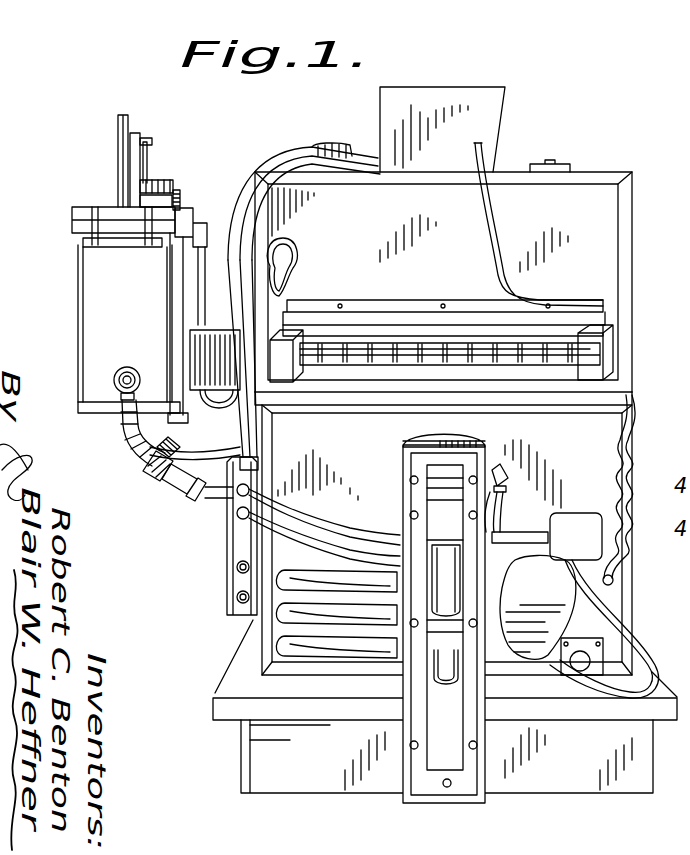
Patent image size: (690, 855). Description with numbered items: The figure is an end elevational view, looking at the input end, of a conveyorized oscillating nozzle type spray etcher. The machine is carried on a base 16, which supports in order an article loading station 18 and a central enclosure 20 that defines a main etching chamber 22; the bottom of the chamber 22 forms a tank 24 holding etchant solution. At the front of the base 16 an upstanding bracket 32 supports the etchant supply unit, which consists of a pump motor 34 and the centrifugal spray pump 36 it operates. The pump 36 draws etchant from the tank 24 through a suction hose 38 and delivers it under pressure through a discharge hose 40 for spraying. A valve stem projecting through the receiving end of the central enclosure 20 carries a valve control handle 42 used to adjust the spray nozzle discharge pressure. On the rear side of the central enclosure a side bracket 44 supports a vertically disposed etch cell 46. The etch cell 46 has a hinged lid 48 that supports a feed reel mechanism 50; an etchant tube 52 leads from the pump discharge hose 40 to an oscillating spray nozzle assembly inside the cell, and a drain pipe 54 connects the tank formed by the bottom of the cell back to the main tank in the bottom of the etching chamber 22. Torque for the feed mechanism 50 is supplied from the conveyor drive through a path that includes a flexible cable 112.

The base 16 is at (623, 782).
The article loading station 18 is at (615, 306).
The central enclosure 20 is at (632, 215).
The main etching chamber 22 is at (550, 595).
The tank 24 is at (582, 645).
The upstanding bracket 32 is at (487, 503).
The pump motor 34 is at (485, 438).
The spray pump 36 is at (447, 640).
The suction hose 38 is at (372, 667).
The discharge hose 40 is at (343, 630).
The valve control handle 42 is at (284, 284).
The side bracket 44 is at (205, 330).
The etch cell 46 is at (95, 290).
The hinged lid 48 is at (75, 215).
The feed reel mechanism 50 is at (170, 183).
The etchant tube 52 is at (216, 446).
The drain pipe 54 is at (172, 483).
The flexible cable 112 is at (203, 250).